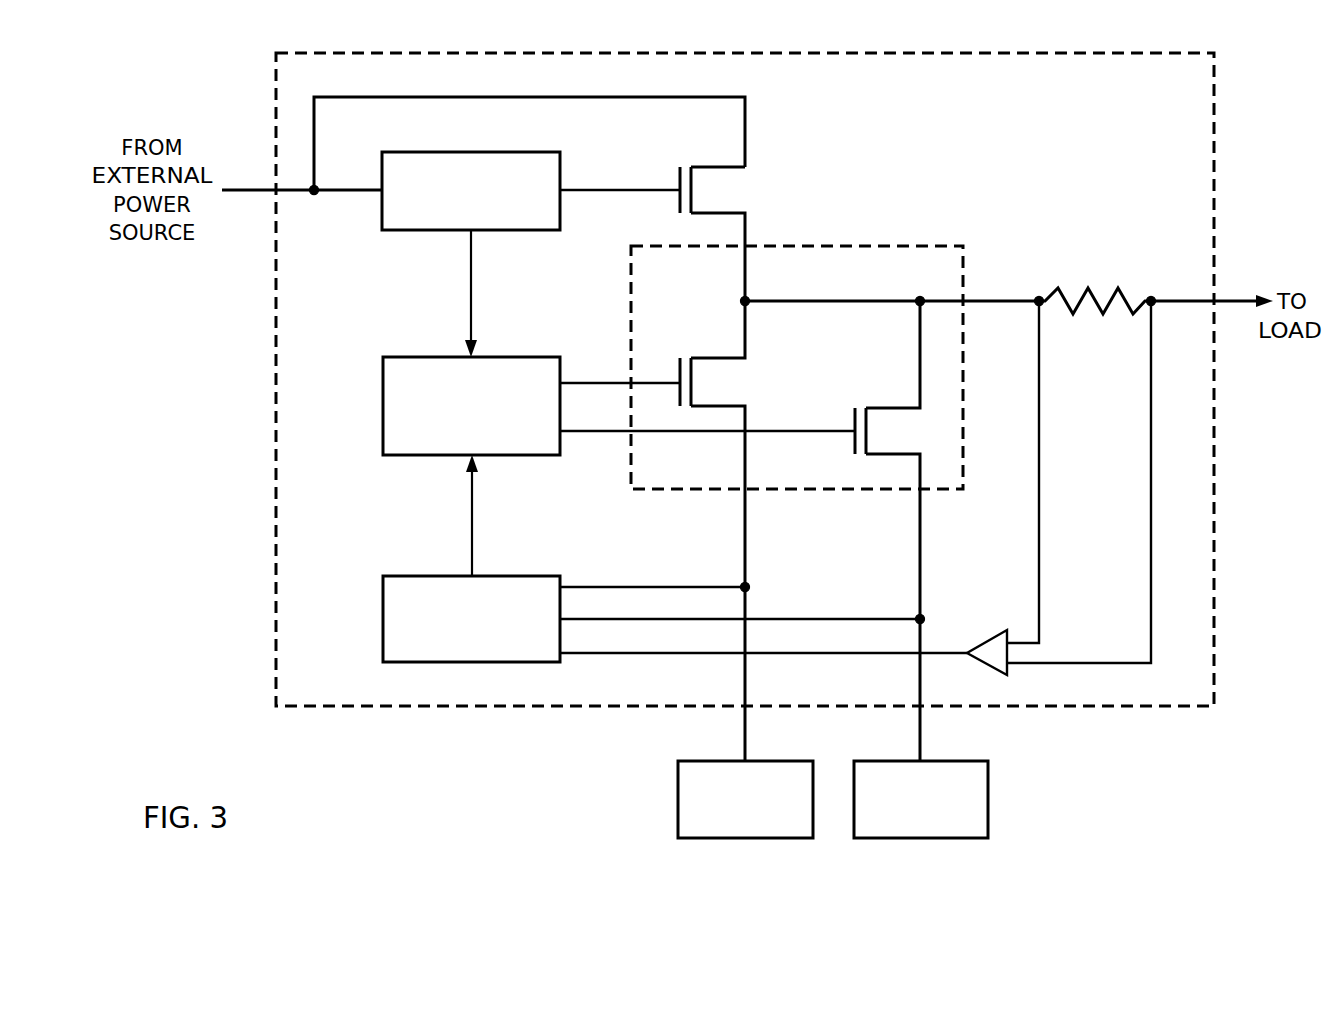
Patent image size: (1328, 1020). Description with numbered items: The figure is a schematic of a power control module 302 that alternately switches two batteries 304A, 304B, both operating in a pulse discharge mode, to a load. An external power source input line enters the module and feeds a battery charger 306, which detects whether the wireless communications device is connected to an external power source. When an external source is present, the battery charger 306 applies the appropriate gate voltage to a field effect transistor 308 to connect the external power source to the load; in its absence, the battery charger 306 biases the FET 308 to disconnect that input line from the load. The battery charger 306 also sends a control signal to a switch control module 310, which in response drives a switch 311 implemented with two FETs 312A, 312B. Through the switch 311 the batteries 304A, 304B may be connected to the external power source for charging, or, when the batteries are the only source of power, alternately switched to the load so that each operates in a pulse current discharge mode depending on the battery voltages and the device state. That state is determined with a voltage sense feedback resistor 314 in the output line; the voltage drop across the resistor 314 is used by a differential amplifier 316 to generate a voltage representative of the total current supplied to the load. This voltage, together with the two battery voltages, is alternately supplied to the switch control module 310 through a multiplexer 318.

The power control module 302 is at (1163, 53).
The battery 304A is at (705, 760).
The battery 304B is at (958, 760).
The battery charger 306 is at (490, 231).
The field effect transistor 308 is at (745, 215).
The switch control module 310 is at (490, 456).
The switch 311 is at (900, 245).
The field effect transistor 312A is at (745, 357).
The field effect transistor 312B is at (919, 406).
The voltage sense feedback resistor 314 is at (1086, 292).
The differential amplifier 316 is at (984, 636).
The multiplexer 318 is at (490, 575).